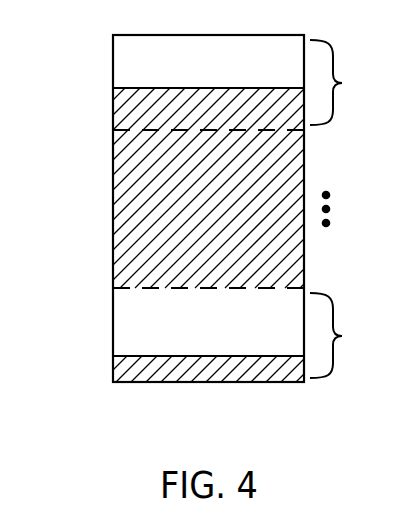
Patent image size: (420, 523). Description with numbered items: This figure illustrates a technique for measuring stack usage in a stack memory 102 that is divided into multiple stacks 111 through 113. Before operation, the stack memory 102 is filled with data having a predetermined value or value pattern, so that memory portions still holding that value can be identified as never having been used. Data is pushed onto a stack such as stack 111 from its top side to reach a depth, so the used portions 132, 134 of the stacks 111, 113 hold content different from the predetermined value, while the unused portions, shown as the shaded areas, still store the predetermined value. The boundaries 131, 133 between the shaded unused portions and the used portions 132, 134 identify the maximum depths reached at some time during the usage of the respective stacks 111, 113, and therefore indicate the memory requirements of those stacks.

The stack memory 102 is at (112, 205).
The stack 111 is at (331, 113).
The stack 113 is at (331, 305).
The boundary 131 is at (128, 87).
The used portion 132 is at (225, 68).
The boundary 133 is at (128, 355).
The used portion 134 is at (225, 334).